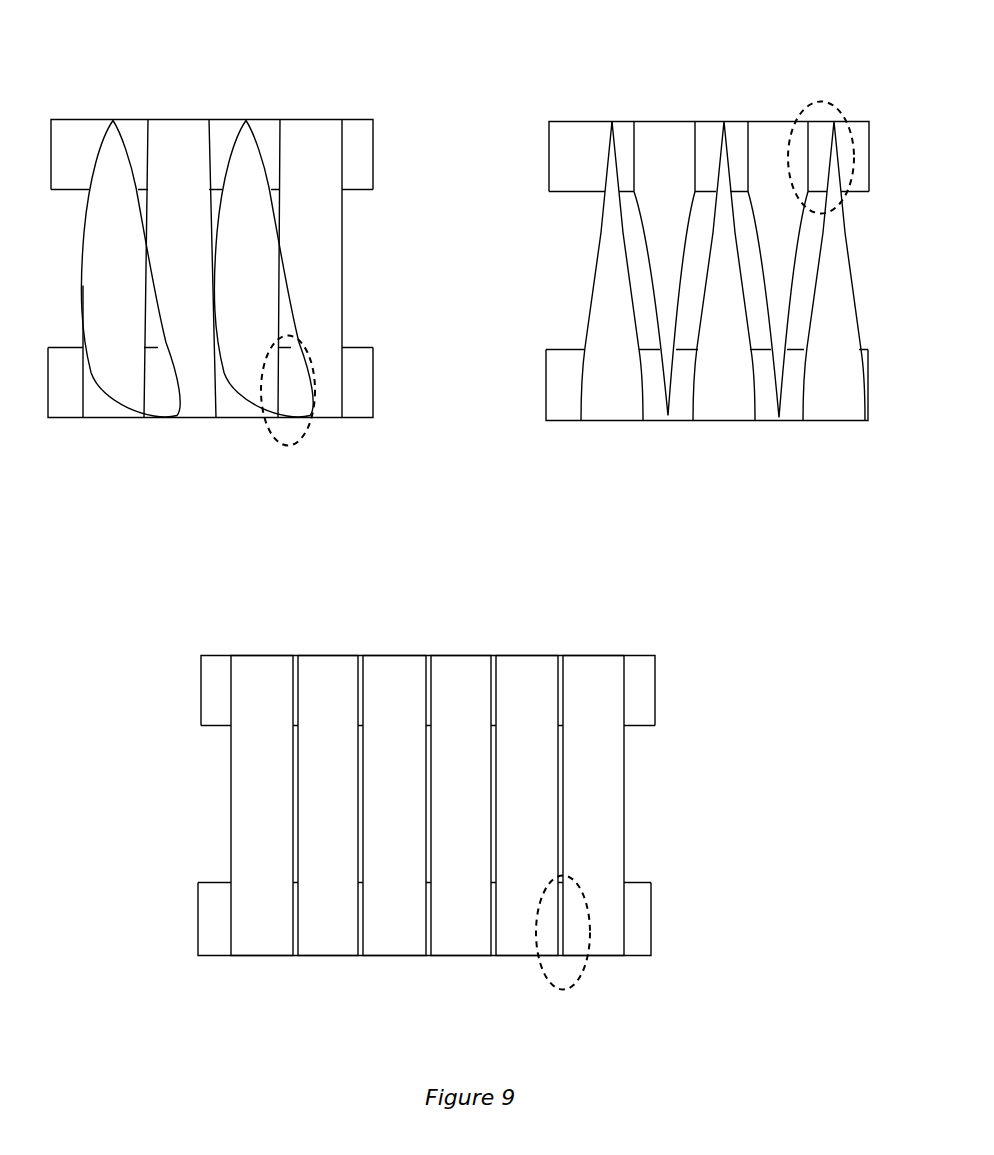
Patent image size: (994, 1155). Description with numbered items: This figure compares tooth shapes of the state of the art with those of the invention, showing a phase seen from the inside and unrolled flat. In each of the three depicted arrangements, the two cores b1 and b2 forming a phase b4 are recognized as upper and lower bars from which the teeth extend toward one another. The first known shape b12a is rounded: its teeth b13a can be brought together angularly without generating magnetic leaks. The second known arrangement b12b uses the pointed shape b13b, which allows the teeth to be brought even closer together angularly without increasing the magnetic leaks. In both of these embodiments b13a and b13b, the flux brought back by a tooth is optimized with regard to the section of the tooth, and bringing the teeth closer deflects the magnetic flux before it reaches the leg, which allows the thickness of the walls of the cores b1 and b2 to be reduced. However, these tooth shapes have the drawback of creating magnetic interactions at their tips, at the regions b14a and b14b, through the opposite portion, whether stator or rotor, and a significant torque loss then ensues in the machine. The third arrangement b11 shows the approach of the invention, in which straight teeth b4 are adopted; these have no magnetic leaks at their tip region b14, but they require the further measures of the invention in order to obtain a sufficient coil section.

The core b1 is at (62, 403).
The core b2 is at (62, 143).
The straight teeth b4 is at (338, 683).
The grid with parallel strips b11 is at (467, 812).
The first known shape b12a is at (254, 274).
The grid with tapered strips b12b is at (704, 266).
The teeth b13a is at (190, 146).
The second pointed known shape b13b is at (668, 148).
The tip region of straight teeth b14 is at (577, 977).
The tip of rounded teeth b14a is at (303, 432).
The tip of pointed teeth b14b is at (840, 108).